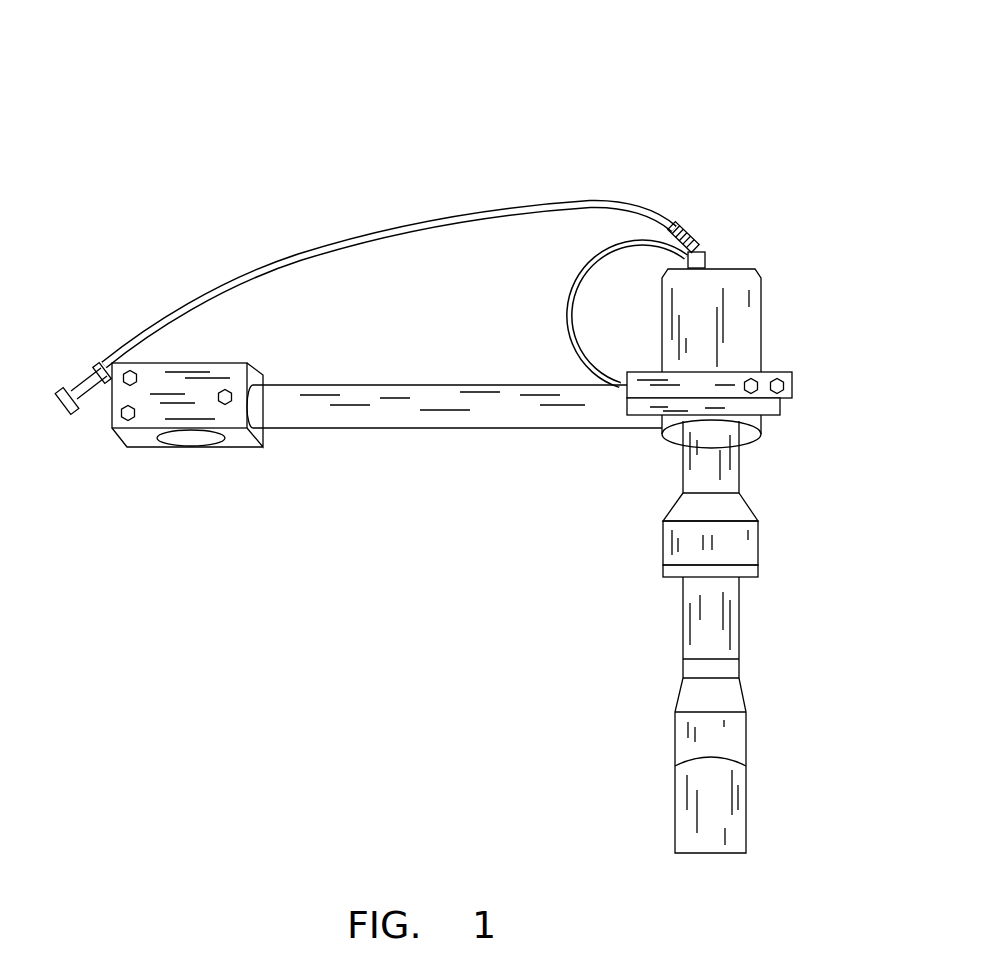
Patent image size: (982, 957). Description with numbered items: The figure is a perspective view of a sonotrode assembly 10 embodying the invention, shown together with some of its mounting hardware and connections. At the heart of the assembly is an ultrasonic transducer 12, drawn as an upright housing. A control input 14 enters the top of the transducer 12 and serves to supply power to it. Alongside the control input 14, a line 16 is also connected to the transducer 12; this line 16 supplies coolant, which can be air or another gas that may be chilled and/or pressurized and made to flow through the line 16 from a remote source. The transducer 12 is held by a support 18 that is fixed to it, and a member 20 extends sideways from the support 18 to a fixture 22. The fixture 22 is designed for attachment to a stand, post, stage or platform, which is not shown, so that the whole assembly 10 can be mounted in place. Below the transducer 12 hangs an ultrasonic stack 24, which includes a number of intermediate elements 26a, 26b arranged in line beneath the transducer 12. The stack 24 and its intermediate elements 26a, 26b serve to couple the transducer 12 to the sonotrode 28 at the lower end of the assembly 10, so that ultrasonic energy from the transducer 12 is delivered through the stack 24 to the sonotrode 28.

The sonotrode assembly 10 is at (450, 436).
The ultrasonic transducer 12 is at (742, 330).
The control input 14 is at (617, 202).
The line 16 is at (597, 252).
The support 18 is at (790, 390).
The member 20 is at (393, 430).
The fixture 22 is at (112, 446).
The ultrasonic stack 24 is at (733, 547).
The intermediate element 26a is at (670, 547).
The intermediate element 26b is at (692, 627).
The sonotrode 28 is at (730, 735).